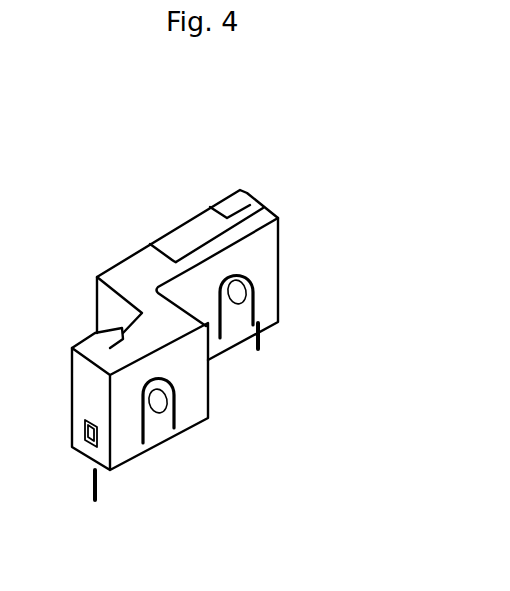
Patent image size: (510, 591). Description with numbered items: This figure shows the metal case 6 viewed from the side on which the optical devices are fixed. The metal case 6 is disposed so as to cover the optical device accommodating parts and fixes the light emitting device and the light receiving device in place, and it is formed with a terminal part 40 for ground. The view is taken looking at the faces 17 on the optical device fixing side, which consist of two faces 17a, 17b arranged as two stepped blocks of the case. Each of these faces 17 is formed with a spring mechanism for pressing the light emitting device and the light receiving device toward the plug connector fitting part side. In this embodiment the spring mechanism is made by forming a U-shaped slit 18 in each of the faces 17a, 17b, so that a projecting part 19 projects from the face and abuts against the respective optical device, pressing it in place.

The metal case 6 is at (285, 199).
The faces on the optical device fixing side 17 is at (254, 337).
The face on the optical device fixing side 17a is at (273, 292).
The face on the optical device fixing side 17b is at (200, 417).
The U-shaped slit 18 is at (257, 305).
The projecting part 19 is at (255, 280).
The terminal part for ground 40 is at (258, 347).